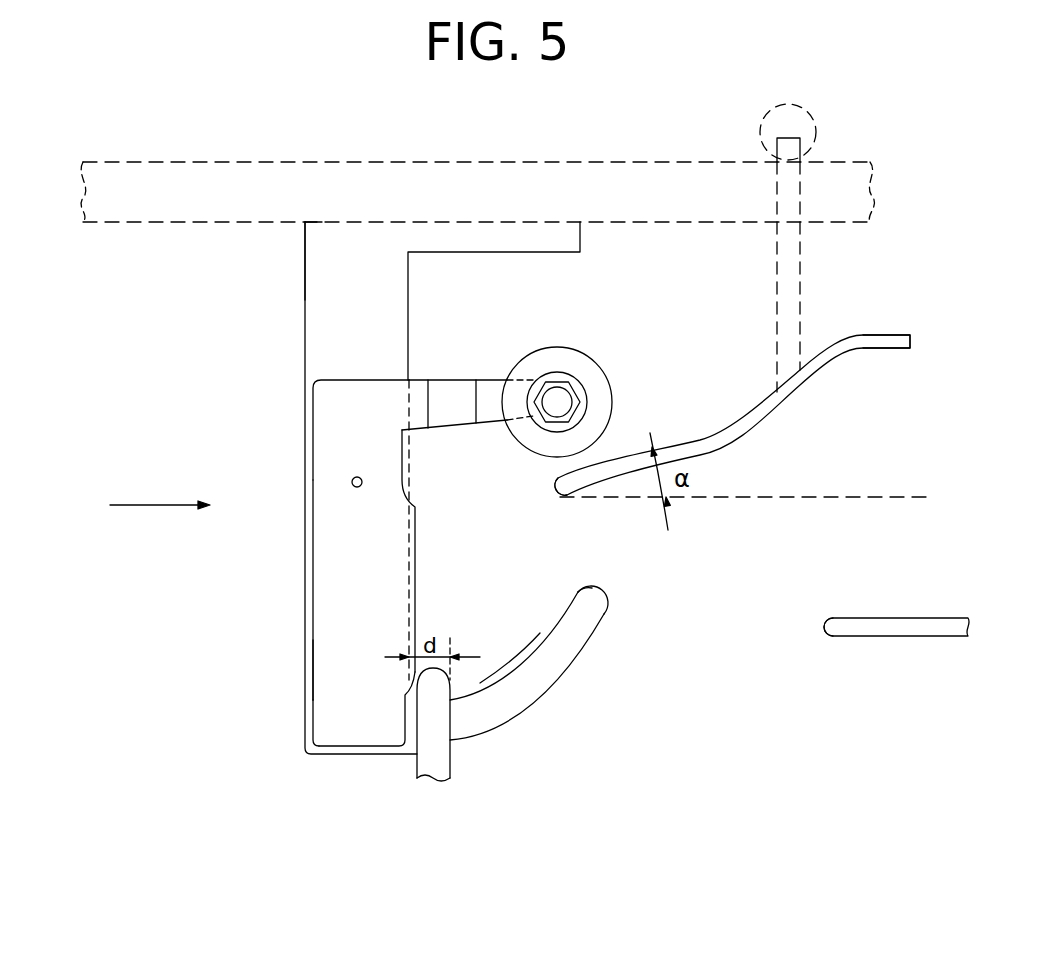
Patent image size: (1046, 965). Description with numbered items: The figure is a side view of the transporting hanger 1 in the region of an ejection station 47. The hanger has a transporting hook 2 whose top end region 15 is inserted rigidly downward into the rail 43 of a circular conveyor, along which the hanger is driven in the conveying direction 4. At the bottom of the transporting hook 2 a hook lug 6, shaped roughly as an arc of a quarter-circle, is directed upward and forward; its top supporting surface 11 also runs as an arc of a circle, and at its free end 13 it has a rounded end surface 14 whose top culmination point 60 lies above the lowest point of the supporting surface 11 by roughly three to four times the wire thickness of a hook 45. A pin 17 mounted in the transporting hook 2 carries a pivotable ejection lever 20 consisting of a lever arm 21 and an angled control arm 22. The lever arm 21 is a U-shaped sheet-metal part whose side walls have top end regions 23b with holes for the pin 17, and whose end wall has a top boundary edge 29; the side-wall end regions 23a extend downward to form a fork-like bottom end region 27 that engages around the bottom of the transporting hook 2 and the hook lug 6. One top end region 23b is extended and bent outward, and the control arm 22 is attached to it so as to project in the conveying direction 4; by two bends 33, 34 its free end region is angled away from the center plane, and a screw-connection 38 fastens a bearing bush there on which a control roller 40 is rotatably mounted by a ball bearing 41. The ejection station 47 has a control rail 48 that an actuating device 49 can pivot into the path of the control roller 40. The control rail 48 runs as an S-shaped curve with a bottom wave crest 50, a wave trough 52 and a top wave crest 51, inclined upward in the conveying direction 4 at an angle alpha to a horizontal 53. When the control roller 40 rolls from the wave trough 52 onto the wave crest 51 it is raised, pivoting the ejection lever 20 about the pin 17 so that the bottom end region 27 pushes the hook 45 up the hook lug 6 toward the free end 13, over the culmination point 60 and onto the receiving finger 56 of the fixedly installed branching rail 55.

The transporting hanger 1 is at (230, 442).
The transporting hook 2 is at (320, 334).
The conveying direction 4 is at (159, 507).
The hook lug 6 is at (537, 677).
The supporting surface 11 is at (507, 663).
The free end 13 is at (588, 610).
The end surface 14 is at (603, 593).
The top end region 15 is at (318, 253).
The pin 17 is at (352, 482).
The ejection lever 20 is at (335, 588).
The lever arm 21 is at (327, 663).
The control arm 22 is at (460, 392).
The side-wall end regions 23a is at (347, 738).
The top end region of side wall 23b is at (325, 397).
The bottom end region 27 is at (327, 725).
The top boundary edge 29 is at (413, 503).
The bend 33 is at (440, 400).
The bend 34 is at (465, 408).
The screw-connection 38 is at (556, 400).
The control roller 40 is at (582, 350).
The ball bearing 41 is at (580, 398).
The rail 43 is at (503, 176).
The hook 45 is at (442, 763).
The ejection station 47 is at (660, 708).
The control rail 48 is at (757, 415).
The actuating device 49 is at (790, 315).
The bottom wave crest 50 is at (580, 472).
The top wave crest 51 is at (855, 343).
The wave trough 52 is at (740, 412).
The horizontal 53 is at (790, 503).
The branching rail 55 is at (930, 629).
The receiving finger 56 is at (860, 629).
The top culmination point 60 is at (587, 583).